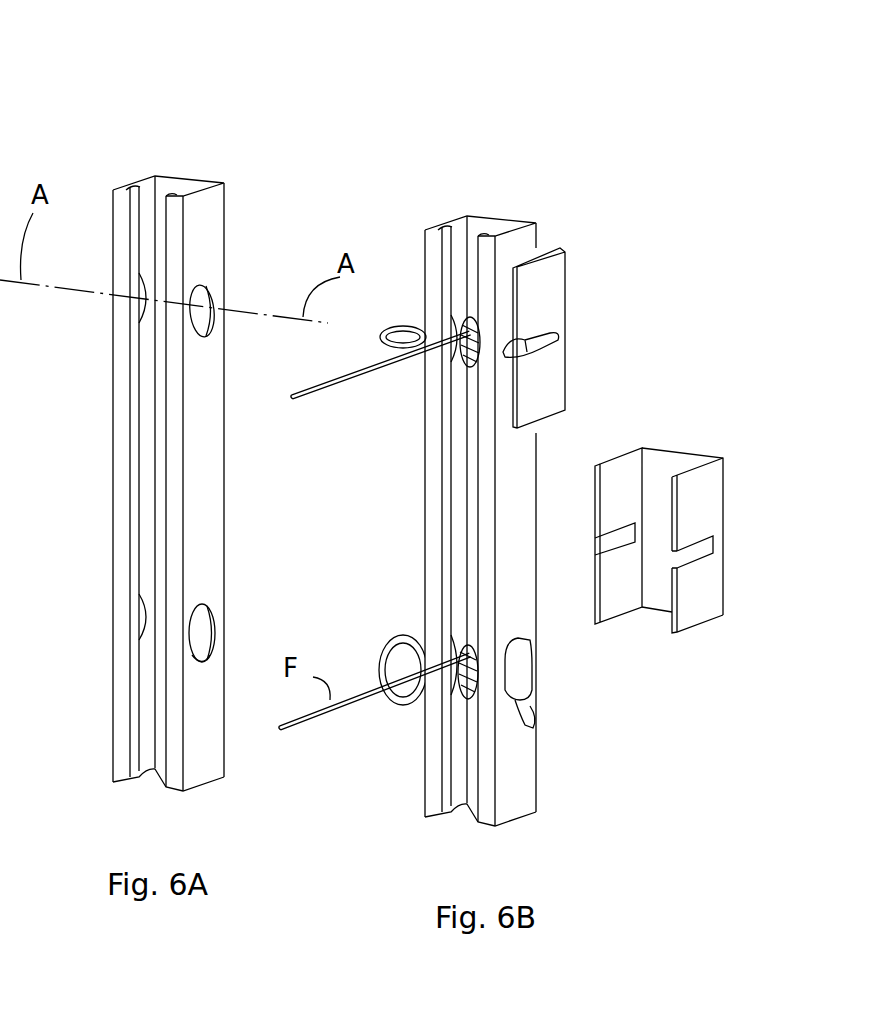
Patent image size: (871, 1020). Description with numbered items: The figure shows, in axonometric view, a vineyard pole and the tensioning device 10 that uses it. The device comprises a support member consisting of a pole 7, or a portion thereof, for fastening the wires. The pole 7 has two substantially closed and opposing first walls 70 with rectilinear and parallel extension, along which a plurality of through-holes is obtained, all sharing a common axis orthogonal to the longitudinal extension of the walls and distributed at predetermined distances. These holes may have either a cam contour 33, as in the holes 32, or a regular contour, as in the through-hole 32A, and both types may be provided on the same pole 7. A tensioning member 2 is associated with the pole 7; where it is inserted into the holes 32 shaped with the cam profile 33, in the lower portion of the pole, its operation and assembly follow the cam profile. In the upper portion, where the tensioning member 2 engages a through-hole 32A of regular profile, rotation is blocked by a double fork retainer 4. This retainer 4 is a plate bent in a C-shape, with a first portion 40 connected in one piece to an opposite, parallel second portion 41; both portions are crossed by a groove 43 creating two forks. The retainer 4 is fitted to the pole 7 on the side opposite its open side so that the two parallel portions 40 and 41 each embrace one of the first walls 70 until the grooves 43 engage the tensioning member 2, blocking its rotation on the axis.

In FIG. 6B, the tensioning device 10 is at (575, 103).
In FIG. 6B, the tensioning member 2 is at (389, 312).
In FIG. 6A, the pole 7 is at (232, 187).
In FIG. 6B, the pole 7 is at (470, 210).
In FIG. 6A, the first walls 70 is at (145, 191).
In FIG. 6B, the double fork retainer 4 is at (567, 247).
In FIG. 6B, the second portion 41 is at (615, 490).
In FIG. 6B, the first portion 40 is at (695, 600).
In FIG. 6B, the groove 43 is at (603, 560).
In FIG. 6A, the holes 32 is at (148, 611).
In FIG. 6B, the holes 32 is at (518, 677).
In FIG. 6A, the through-hole 32A is at (210, 318).
In FIG. 6A, the cam contour 33 is at (200, 661).